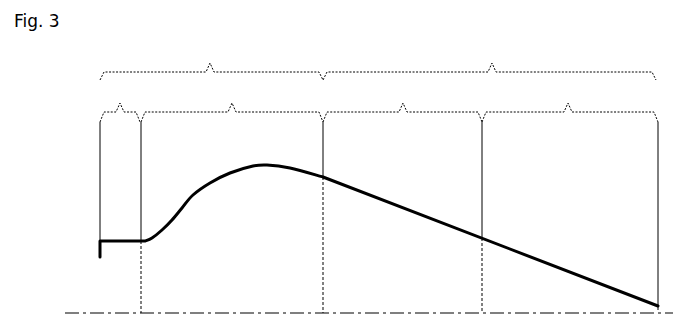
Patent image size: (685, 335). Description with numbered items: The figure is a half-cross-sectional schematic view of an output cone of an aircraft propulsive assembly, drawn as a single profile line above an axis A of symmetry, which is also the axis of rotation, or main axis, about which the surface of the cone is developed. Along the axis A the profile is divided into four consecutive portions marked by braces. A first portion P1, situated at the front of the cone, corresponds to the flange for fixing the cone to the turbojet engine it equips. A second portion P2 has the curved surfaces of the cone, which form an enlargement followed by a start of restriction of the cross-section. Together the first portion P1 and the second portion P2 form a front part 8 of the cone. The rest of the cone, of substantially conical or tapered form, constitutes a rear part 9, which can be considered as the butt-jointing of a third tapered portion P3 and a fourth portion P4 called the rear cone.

The front part 8 is at (211, 60).
The rear part 9 is at (489, 60).
The first portion P1 is at (120, 102).
The second portion P2 is at (232, 102).
The third tapered portion P3 is at (402, 102).
The fourth portion P4 is at (570, 102).
The axis of symmetry A is at (355, 316).